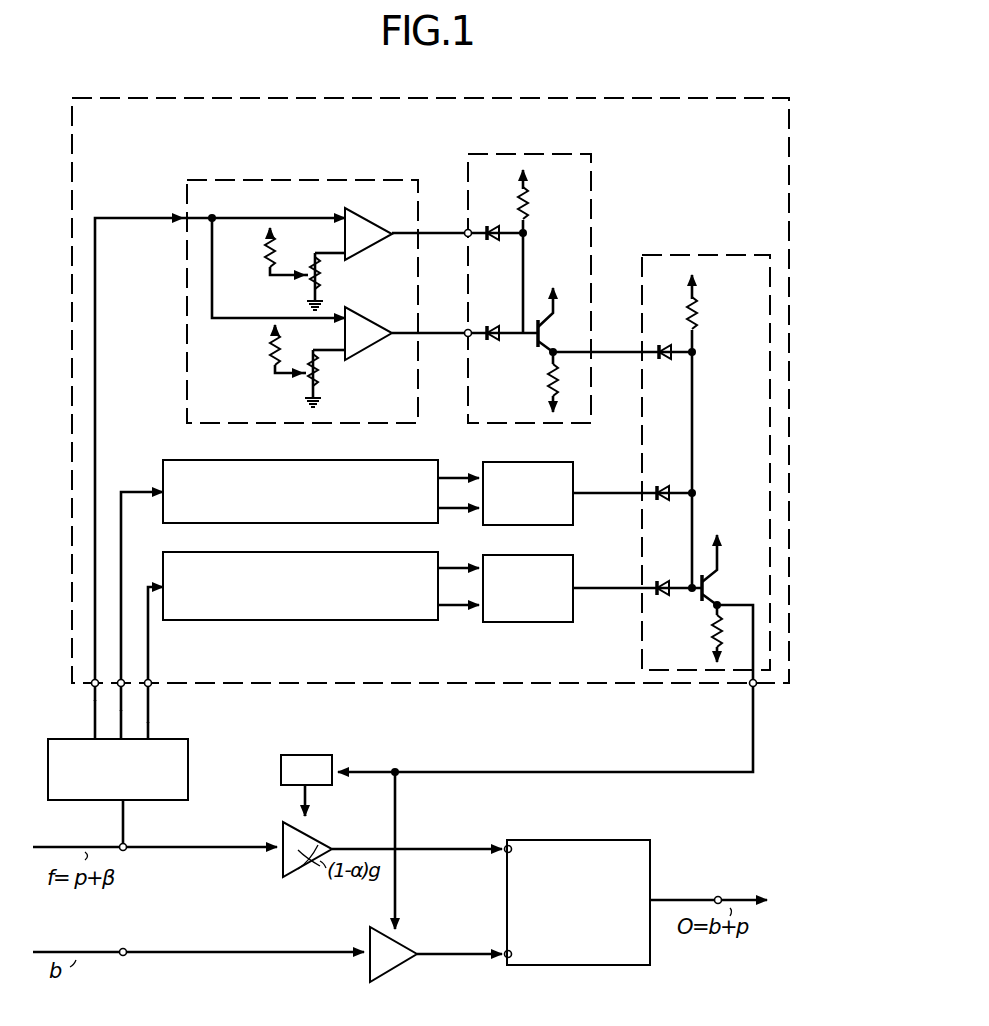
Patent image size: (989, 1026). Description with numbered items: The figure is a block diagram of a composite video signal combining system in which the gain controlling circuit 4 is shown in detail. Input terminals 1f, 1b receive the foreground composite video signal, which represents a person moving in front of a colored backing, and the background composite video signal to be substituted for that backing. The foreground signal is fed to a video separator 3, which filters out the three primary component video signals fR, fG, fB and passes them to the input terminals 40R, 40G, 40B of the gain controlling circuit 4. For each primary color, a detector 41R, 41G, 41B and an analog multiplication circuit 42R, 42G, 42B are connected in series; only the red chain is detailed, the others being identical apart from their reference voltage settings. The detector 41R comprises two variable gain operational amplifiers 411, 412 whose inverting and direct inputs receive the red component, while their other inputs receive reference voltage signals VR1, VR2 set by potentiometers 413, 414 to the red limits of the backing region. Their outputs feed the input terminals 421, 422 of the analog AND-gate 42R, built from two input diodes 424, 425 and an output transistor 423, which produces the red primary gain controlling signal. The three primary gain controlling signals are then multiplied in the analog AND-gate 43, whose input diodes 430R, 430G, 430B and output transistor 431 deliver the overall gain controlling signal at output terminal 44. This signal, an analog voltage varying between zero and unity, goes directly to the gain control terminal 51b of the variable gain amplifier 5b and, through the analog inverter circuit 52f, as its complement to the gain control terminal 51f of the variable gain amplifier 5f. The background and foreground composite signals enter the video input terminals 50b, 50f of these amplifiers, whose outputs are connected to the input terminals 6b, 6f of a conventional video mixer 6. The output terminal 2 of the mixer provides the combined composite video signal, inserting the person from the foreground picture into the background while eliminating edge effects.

The gain controlling circuit 4 is at (527, 86).
The video separator 3 is at (188, 762).
The input terminal 40R is at (90, 686).
The input terminal 40G is at (125, 678).
The input terminal 40B is at (165, 666).
The red primary component video signal fR is at (95, 724).
The green primary component video signal fG is at (123, 712).
The blue primary component video signal fB is at (150, 724).
The detector 41R is at (305, 172).
The variable gain operational amplifier 411 is at (378, 207).
The variable gain operational amplifier 412 is at (381, 306).
The potentiometer 413 is at (319, 276).
The potentiometer 414 is at (317, 374).
The voltage signal VR1 is at (317, 252).
The voltage signal VR2 is at (317, 348).
The analog multiplication circuit 42R is at (592, 192).
The input terminal 421 is at (463, 240).
The input terminal 422 is at (463, 340).
The transistor 423 is at (548, 331).
The diode 424 is at (497, 243).
The diode 425 is at (497, 343).
The analog multiplication circuit 43 is at (697, 256).
The diode 430R is at (668, 362).
The diode 430G is at (666, 503).
The diode 430B is at (666, 598).
The transistor 431 is at (710, 588).
The detector 41G is at (301, 452).
The detector 41B is at (306, 610).
The analog multiplication circuit 42G is at (528, 451).
The analog multiplication circuit 42B is at (536, 612).
The output terminal 44 is at (752, 688).
The input terminal 1f is at (127, 843).
The input terminal 1b is at (125, 947).
The analog inverter circuit 52f is at (308, 745).
The gain control terminal 51f is at (309, 826).
The video input terminal 50f is at (281, 852).
The variable gain amplifier 5f is at (288, 877).
The variable gain amplifier 5b is at (390, 972).
The gain control terminal 51b is at (397, 940).
The video input terminal 50b is at (366, 958).
The input terminal 6f is at (506, 844).
The input terminal 6b is at (504, 960).
The video mixer 6 is at (573, 840).
The output terminal 2 is at (718, 896).